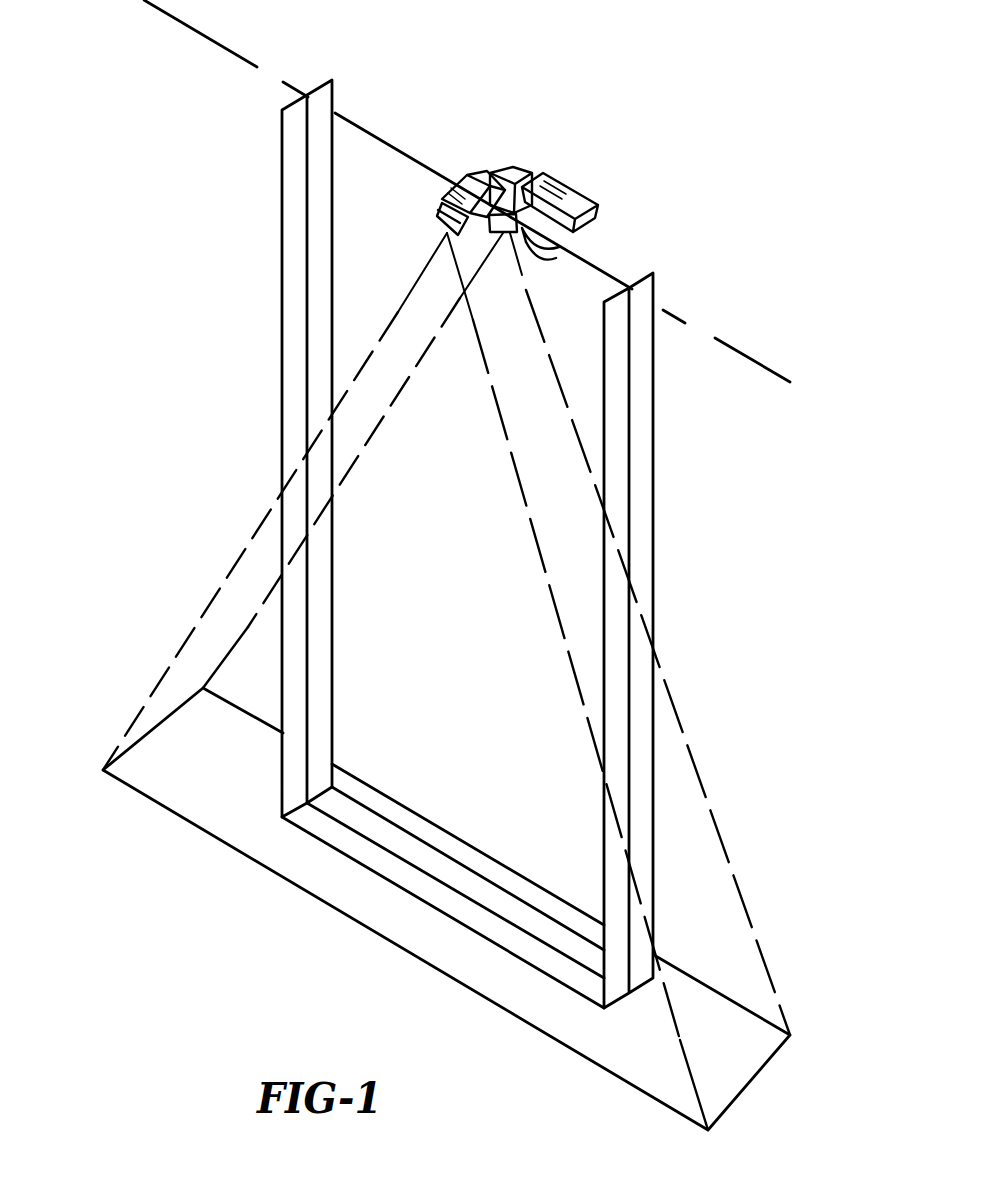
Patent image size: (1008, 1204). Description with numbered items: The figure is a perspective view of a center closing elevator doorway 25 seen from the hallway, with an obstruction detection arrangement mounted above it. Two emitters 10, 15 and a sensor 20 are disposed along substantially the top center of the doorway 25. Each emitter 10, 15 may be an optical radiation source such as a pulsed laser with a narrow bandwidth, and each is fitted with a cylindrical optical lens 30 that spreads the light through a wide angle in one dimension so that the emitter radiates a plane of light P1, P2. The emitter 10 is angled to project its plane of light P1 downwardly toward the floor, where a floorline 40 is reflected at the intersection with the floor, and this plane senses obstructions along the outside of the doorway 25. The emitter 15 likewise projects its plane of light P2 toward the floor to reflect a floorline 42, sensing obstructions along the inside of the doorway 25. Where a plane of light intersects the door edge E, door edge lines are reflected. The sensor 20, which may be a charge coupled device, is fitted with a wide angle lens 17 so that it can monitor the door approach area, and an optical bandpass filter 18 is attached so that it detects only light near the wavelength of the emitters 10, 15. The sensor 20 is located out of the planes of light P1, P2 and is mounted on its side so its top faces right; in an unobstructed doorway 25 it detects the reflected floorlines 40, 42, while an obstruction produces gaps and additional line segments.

The emitter 10 is at (452, 176).
The emitter 15 is at (515, 167).
The wide angle lens 17 is at (545, 256).
The optical bandpass filter 18 is at (560, 247).
The sensor 20 is at (567, 178).
The doorway 25 is at (262, 328).
The cylindrical optical lens 30 is at (438, 224).
The floorline 40 is at (367, 925).
The floorline 42 is at (392, 798).
The door edge E is at (333, 617).
The plane of light P1 is at (178, 705).
The plane of light P2 is at (693, 838).